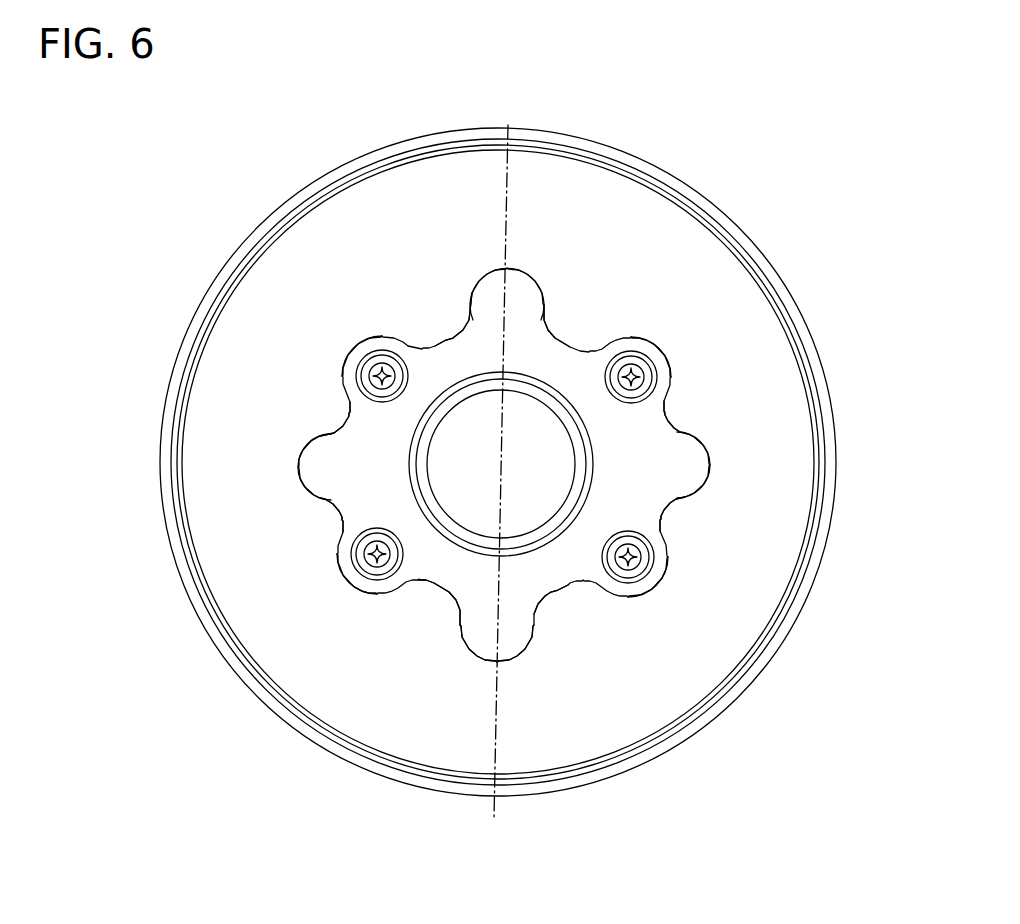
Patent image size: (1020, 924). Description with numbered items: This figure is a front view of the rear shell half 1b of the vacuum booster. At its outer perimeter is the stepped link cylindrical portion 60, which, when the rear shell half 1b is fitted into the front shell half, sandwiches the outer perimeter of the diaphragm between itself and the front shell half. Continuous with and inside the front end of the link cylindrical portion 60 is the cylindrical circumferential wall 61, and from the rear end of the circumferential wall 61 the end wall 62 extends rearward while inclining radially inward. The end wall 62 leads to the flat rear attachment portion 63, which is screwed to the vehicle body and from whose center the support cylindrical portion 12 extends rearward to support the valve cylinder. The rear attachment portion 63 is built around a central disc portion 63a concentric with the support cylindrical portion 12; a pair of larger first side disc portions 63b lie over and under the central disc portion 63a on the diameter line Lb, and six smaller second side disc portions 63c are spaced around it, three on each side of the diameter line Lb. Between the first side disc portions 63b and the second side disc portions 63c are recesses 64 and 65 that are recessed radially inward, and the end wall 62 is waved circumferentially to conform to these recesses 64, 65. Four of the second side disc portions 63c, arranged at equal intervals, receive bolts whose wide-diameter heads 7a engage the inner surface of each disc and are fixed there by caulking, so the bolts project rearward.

The rear shell half 1b is at (498, 442).
The link cylindrical portion 60 is at (462, 130).
The circumferential wall 61 is at (590, 142).
The end wall 62 is at (340, 220).
The rear attachment portion 63 is at (549, 307).
The central disc portion 63a is at (488, 362).
The first side disc portions 63b is at (492, 285).
The second side disc portions 63c is at (362, 346).
The recess 64 is at (348, 417).
The recess 65 is at (442, 340).
The wide-diameter head 7a is at (377, 398).
The support cylindrical portion 12 is at (533, 532).
The diameter line Lb is at (470, 657).